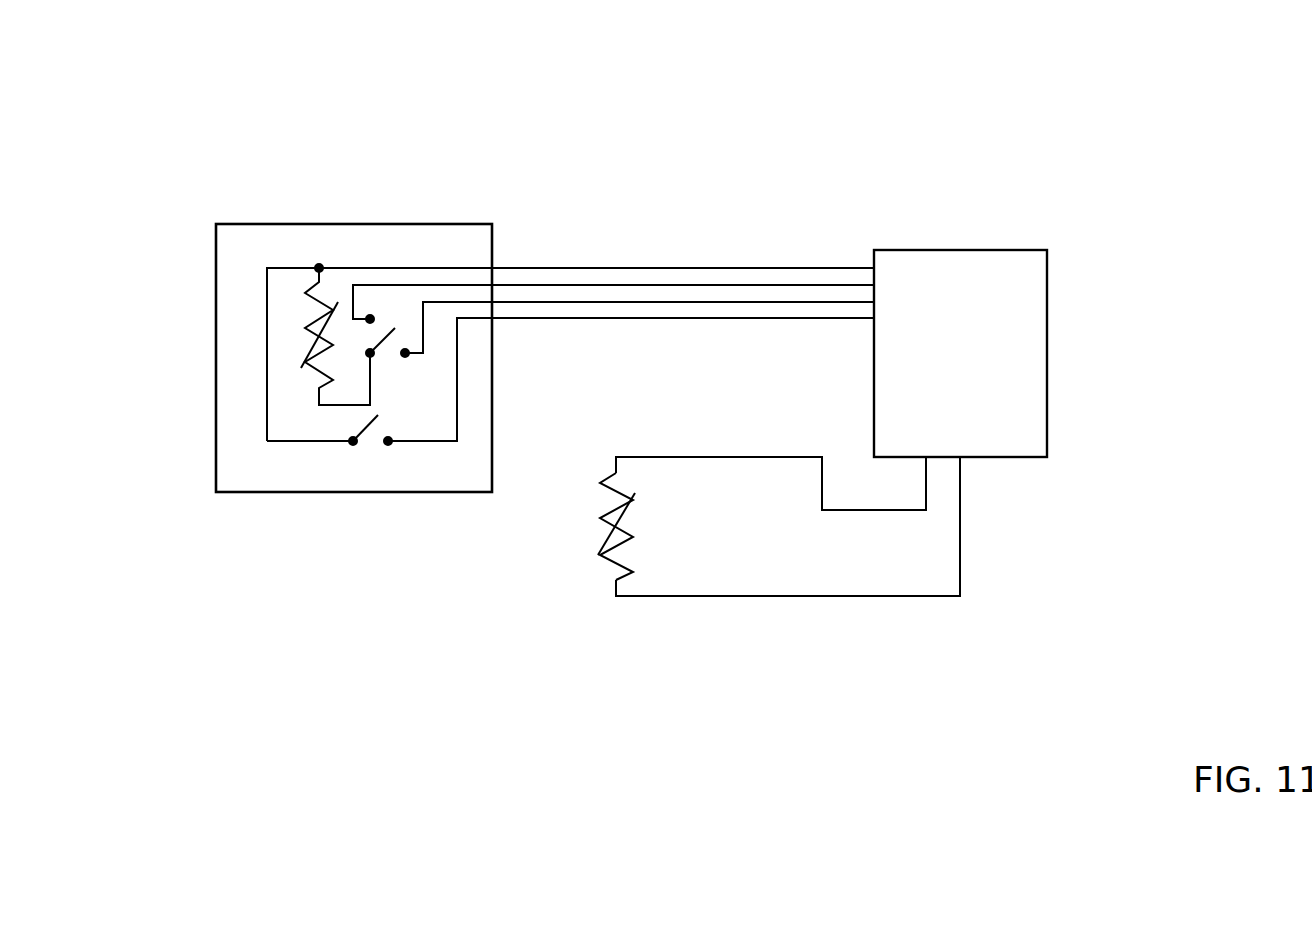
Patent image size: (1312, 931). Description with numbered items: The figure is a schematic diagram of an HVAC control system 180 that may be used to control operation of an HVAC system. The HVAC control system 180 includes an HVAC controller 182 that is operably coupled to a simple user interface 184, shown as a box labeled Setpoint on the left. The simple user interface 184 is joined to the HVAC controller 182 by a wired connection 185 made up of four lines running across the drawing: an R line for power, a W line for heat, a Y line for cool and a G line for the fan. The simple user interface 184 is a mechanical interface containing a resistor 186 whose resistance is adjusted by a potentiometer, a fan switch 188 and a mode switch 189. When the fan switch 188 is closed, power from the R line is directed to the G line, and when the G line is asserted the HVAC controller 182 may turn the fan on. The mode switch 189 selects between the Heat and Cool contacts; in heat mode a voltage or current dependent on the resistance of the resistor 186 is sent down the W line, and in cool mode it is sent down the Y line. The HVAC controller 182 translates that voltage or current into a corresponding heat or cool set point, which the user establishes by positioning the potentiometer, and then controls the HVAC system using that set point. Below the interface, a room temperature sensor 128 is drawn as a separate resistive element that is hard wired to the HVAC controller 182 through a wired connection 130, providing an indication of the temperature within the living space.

The HVAC control system 180 is at (1040, 57).
The HVAC controller 182 is at (1047, 355).
The simple user interface 184 is at (216, 353).
The wired connection 185 is at (784, 214).
The resistor 186 is at (287, 404).
The fan switch 188 is at (374, 472).
The mode switch 189 is at (448, 338).
The room temperature sensor 128 is at (616, 588).
The wired connection 130 is at (781, 624).